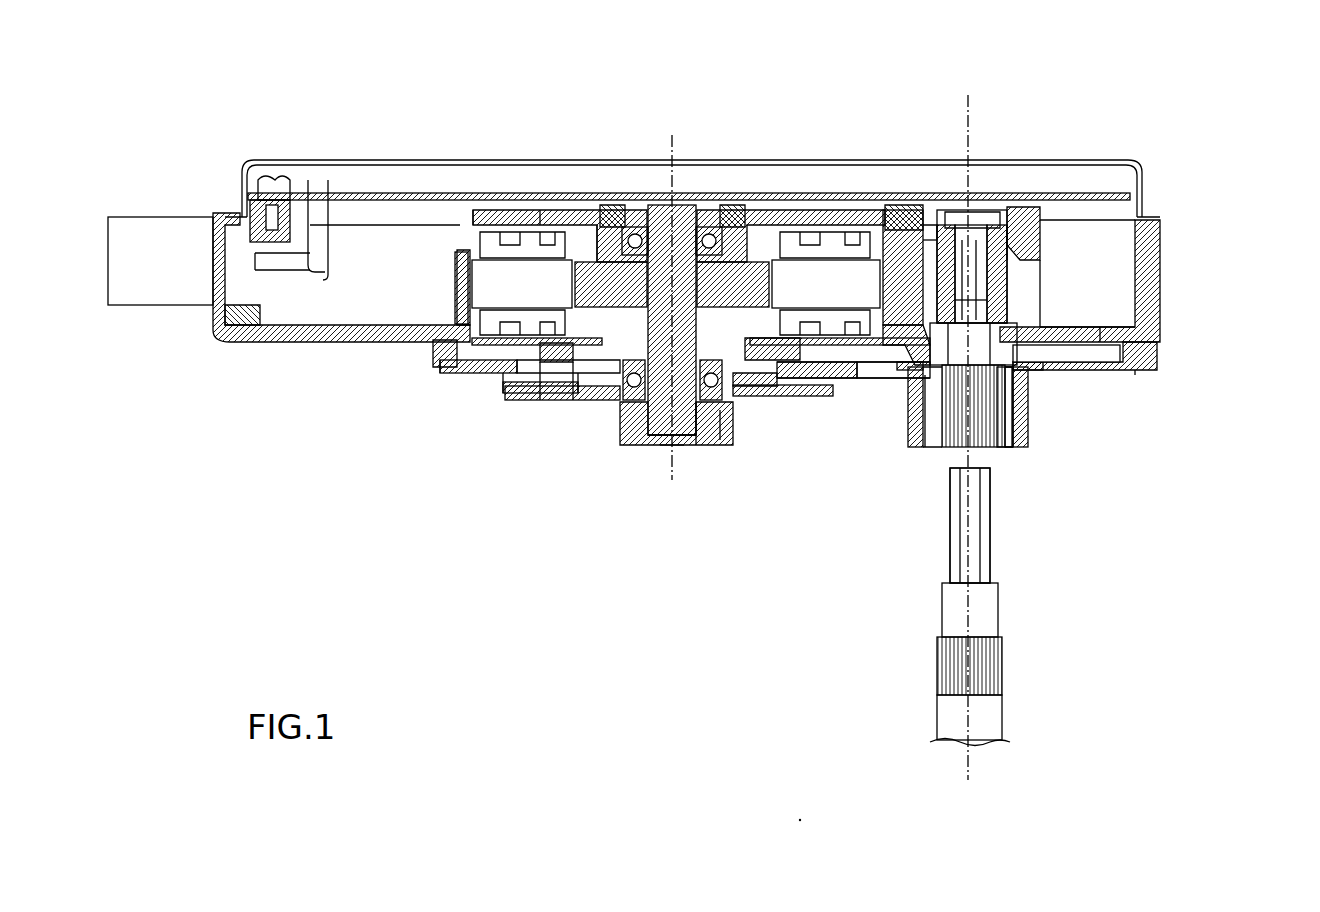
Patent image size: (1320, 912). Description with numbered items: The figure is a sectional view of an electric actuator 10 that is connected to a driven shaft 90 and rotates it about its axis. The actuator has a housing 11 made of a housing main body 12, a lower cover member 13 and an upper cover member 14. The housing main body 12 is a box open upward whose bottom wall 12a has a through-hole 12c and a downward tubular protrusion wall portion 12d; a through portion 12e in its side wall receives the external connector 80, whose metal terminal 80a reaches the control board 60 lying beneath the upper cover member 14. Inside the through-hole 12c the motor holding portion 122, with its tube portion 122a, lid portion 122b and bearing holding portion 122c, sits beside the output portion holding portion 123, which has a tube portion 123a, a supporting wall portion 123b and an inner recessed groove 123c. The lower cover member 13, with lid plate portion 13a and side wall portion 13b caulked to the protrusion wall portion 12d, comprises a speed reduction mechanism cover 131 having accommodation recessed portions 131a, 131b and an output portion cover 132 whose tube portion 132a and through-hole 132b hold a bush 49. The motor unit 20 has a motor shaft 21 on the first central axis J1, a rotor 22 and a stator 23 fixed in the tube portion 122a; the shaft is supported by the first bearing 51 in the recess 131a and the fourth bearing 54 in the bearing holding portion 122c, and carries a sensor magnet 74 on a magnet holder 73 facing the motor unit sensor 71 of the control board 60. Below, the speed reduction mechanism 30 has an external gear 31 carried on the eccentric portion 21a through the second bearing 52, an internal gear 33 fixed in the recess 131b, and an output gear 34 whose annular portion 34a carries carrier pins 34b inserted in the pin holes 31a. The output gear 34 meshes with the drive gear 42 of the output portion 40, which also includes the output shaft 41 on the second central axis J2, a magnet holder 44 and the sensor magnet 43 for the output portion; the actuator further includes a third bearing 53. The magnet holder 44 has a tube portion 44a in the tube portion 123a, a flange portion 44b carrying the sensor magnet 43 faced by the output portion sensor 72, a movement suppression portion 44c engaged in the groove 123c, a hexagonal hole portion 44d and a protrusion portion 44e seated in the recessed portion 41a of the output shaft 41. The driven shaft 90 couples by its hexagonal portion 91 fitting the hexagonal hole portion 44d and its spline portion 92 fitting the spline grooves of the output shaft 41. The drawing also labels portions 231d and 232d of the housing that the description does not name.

The electric actuator 10 is at (1066, 66).
The housing 11 is at (1240, 155).
The housing main body 12 is at (1162, 282).
The bottom wall 12a is at (310, 342).
The through-hole 12c is at (468, 345).
The protrusion wall portion 12d is at (445, 368).
The through portion 12e is at (218, 312).
The lower cover member 13 is at (1160, 368).
The lid plate portion 13a is at (890, 542).
The side wall portion 13b is at (432, 378).
The upper cover member 14 is at (1145, 210).
The motor unit 20 is at (470, 298).
The motor shaft 21 is at (660, 205).
The eccentric portion 21a is at (668, 450).
The rotor 22 is at (765, 262).
The stator 23 is at (830, 268).
The speed reduction mechanism 30 is at (732, 432).
The external gear 31 is at (548, 400).
The pin hole 31a is at (792, 398).
The internal gear 33 is at (522, 397).
The output gear 34 is at (620, 570).
The annular portion 34a is at (565, 402).
The carrier pin 34b is at (580, 402).
The output portion 40 is at (1032, 442).
The output shaft 41 is at (1032, 413).
The recessed portion 41a is at (950, 450).
The drive gear 42 is at (862, 380).
The sensor magnet for output portion 43 is at (1030, 220).
The magnet holder 44 is at (950, 225).
The tube portion 44a is at (893, 238).
The flange portion 44b is at (917, 225).
The movement suppression portion 44c is at (985, 240).
The hexagonal hole portion 44d is at (1005, 225).
The protrusion portion 44e is at (881, 372).
The bush 49 is at (906, 450).
The first bearing 51 is at (682, 447).
The second bearing 52 is at (710, 447).
The third bearing 53 is at (722, 447).
The fourth bearing 54 is at (725, 228).
The control board 60 is at (358, 193).
The motor unit sensor 71 is at (712, 225).
The output portion sensor 72 is at (905, 215).
The magnet holder 73 is at (634, 227).
The sensor magnet for the motor unit 74 is at (735, 228).
The external connector 80 is at (160, 230).
The metal terminal 80a is at (282, 278).
The driven shaft 90 is at (946, 721).
The hexagonal portion 91 is at (992, 555).
The spline portion 92 is at (1003, 665).
The motor holding portion 122 is at (618, 58).
The tube portion 122a is at (452, 210).
The lid portion 122b is at (505, 210).
The bearing holding portion 122c is at (600, 210).
The output portion holding portion 123 is at (1197, 100).
The tube portion 123a is at (1075, 240).
The supporting wall portion 123b is at (1140, 255).
The recessed groove 123c is at (1062, 345).
The speed reduction mechanism cover 131 is at (800, 398).
The accommodation recessed portion 131a is at (640, 447).
The accommodation recessed portion 131b is at (508, 395).
The output portion cover 132 is at (895, 380).
The tube portion 132a is at (1025, 450).
The through-hole 132b is at (1002, 450).
The terminal guide 231d is at (430, 347).
The housing lower flange 232d is at (1140, 375).
The first central axis J1 is at (674, 135).
The second central axis J2 is at (968, 110).